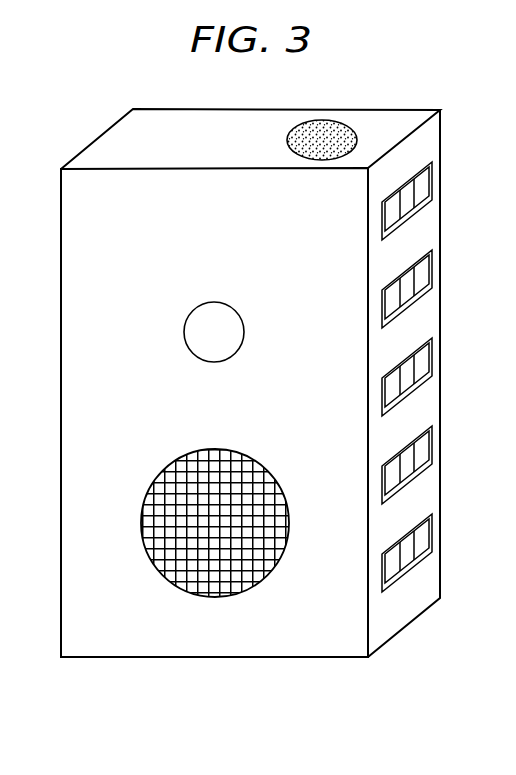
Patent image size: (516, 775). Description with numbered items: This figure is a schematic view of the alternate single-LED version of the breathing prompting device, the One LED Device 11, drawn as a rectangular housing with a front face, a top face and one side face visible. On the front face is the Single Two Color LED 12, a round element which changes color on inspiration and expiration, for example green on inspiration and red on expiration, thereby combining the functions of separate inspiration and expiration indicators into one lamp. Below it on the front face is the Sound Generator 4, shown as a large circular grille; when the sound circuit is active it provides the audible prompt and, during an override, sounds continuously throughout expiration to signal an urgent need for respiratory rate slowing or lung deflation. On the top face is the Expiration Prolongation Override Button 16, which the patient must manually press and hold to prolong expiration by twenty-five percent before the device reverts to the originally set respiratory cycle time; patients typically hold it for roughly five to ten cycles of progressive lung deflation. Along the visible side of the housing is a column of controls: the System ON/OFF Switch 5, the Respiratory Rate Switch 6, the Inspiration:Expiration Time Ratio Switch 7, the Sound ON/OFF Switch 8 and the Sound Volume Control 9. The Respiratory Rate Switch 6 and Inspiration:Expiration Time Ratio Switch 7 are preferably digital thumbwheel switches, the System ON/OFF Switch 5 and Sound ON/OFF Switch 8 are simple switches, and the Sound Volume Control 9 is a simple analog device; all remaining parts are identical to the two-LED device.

The One LED Device 11 is at (223, 110).
The Expiration Prolongation Override Button 16 is at (330, 121).
The Single Two Color LED 12 is at (184, 336).
The Sound Generator 4 is at (141, 525).
The System ON/OFF Switch 5 is at (432, 182).
The Respiratory Rate Switch 6 is at (432, 270).
The Inspiration:Expiration Time Ratio Switch 7 is at (432, 358).
The Sound ON/OFF Switch 8 is at (432, 446).
The Sound Volume Control 9 is at (432, 534).